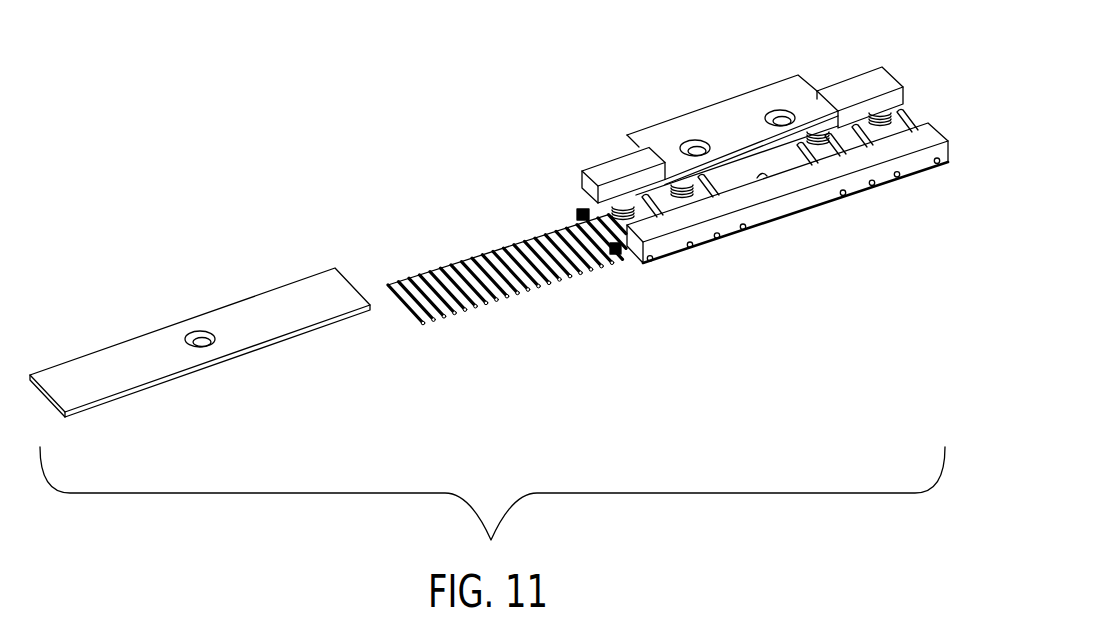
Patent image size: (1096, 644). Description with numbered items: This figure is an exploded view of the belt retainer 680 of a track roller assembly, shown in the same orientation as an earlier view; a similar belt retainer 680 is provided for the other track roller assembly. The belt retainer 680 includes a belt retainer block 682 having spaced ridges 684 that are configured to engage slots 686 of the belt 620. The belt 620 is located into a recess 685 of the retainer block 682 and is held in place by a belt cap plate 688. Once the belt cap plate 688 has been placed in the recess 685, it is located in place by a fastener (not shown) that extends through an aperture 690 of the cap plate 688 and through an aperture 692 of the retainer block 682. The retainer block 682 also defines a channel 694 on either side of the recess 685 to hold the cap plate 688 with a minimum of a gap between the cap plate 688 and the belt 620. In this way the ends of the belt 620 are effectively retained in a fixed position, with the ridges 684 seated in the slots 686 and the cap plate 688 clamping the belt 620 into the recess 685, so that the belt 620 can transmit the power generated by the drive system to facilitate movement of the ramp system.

The belt 620 is at (481, 268).
The belt retainer 680 is at (765, 188).
The belt retainer block 682 is at (742, 117).
The spaced ridges 684 is at (907, 119).
The recess 685 is at (737, 155).
The slots 686 is at (432, 327).
The belt cap plate 688 is at (103, 367).
The aperture 690 is at (200, 338).
The aperture 692 is at (776, 180).
The channel 694 is at (580, 213).